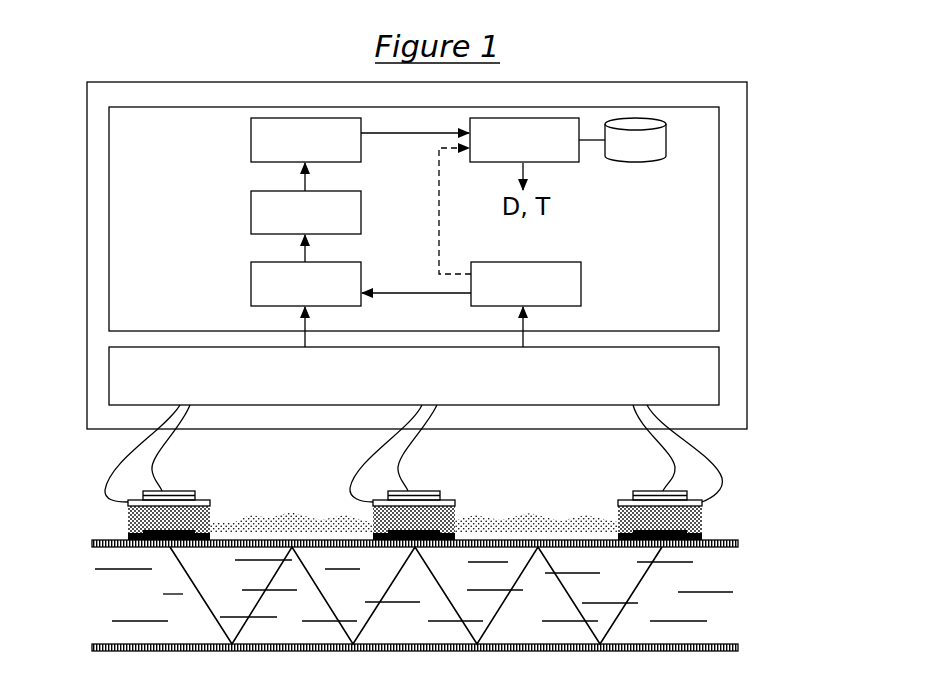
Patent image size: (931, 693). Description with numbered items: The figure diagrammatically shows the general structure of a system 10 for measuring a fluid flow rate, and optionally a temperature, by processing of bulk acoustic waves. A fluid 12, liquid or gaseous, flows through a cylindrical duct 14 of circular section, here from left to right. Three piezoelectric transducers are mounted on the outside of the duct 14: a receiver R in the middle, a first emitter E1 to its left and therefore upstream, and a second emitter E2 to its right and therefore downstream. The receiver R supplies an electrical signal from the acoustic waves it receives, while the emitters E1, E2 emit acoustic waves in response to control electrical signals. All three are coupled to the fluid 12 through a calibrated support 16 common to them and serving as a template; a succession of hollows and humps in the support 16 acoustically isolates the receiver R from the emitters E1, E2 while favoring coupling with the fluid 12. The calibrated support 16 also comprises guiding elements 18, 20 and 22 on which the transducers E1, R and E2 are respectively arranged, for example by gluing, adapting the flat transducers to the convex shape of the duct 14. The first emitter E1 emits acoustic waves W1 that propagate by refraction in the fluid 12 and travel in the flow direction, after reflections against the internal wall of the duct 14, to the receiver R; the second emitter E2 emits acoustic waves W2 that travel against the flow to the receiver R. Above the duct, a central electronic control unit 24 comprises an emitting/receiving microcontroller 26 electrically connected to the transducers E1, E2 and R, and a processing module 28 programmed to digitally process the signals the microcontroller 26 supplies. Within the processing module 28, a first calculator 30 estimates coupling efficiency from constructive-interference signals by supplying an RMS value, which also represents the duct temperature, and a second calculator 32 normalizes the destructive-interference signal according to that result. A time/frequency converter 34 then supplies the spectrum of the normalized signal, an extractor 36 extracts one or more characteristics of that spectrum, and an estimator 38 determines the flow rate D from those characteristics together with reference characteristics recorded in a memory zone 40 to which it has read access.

The system for measuring a flow rate 10 is at (760, 473).
The fluid 12 is at (150, 608).
The cylindrical duct 14 is at (734, 547).
The calibrated support 16 is at (106, 520).
The guiding element 18 is at (169, 515).
The guiding element 20 is at (414, 515).
The guiding element 22 is at (660, 515).
The central electronic control unit 24 is at (747, 193).
The emitting/receiving microcontroller 26 is at (404, 389).
The processing module 28 is at (108, 157).
The first calculator 30 is at (512, 296).
The second calculator 32 is at (292, 296).
The time/frequency converter 34 is at (292, 225).
The extractor 36 is at (292, 152).
The estimator 38 is at (510, 152).
The memory zone 40 is at (623, 157).
The first emitter E1 is at (213, 500).
The second emitter E2 is at (618, 500).
The receiver R is at (455, 500).
The acoustic waves W1 is at (372, 618).
The acoustic waves W2 is at (478, 640).